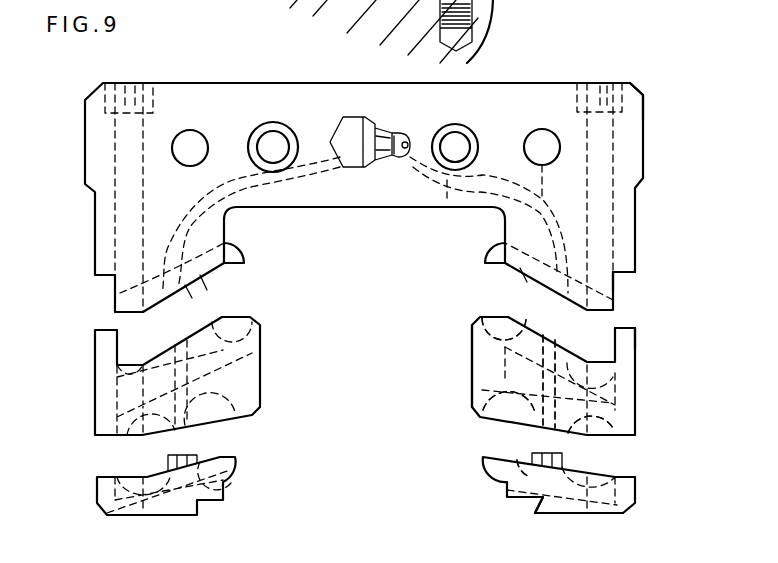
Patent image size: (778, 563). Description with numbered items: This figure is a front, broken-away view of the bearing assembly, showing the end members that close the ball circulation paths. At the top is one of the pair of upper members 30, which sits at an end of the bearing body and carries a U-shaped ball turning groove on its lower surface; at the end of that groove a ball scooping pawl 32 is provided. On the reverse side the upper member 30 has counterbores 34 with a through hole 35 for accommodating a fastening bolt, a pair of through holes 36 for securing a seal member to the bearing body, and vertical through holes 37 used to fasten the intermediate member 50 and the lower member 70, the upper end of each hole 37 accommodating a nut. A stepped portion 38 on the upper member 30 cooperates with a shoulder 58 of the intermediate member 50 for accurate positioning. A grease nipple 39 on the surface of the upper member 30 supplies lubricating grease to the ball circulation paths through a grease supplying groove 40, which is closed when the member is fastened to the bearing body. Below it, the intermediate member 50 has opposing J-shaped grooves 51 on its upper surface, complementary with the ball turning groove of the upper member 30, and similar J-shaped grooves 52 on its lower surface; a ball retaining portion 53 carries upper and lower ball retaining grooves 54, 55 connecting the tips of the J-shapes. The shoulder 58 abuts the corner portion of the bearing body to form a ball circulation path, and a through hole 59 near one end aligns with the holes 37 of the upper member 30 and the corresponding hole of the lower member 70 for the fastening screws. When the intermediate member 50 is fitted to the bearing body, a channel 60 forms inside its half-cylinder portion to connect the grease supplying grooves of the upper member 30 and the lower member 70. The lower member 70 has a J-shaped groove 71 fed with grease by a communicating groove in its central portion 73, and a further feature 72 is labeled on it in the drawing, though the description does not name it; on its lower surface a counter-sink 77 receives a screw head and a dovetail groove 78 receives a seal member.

The upper member 30 is at (572, 80).
The ball scooping pawl 32 is at (490, 256).
The counterbore 34 is at (447, 126).
The through hole 35 is at (459, 136).
The through hole 36 is at (537, 130).
The vertical through hole 37 is at (643, 102).
The stepped portion 38 is at (614, 277).
The grease nipple 39 is at (373, 122).
The grease supplying groove 40 is at (364, 222).
The intermediate member 50 is at (637, 380).
The J-shaped groove 51 is at (573, 384).
The J-shaped groove 52 is at (612, 424).
The ball retaining portion 53 is at (472, 367).
The upper ball retaining groove 54 is at (489, 336).
The lower ball retaining groove 55 is at (483, 418).
The shoulder 58 is at (627, 338).
The through hole 59 is at (615, 410).
The channel 60 is at (568, 362).
The lower member 70 is at (636, 494).
The J-shaped groove 71 is at (609, 478).
The bore 72 is at (530, 462).
The central portion 73 is at (545, 458).
The counter-sink 77 is at (613, 516).
The dovetail groove 78 is at (538, 509).